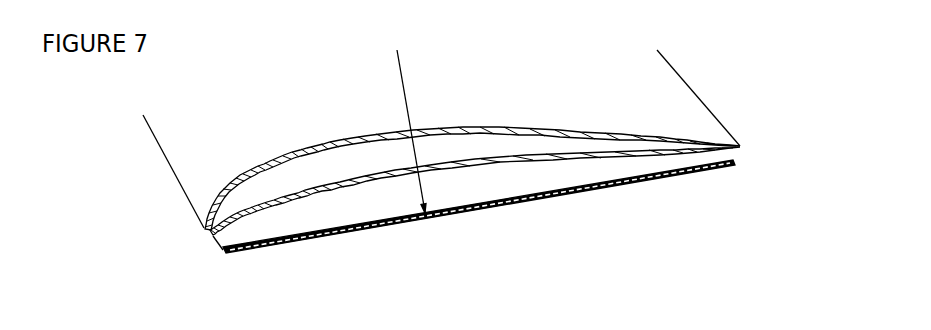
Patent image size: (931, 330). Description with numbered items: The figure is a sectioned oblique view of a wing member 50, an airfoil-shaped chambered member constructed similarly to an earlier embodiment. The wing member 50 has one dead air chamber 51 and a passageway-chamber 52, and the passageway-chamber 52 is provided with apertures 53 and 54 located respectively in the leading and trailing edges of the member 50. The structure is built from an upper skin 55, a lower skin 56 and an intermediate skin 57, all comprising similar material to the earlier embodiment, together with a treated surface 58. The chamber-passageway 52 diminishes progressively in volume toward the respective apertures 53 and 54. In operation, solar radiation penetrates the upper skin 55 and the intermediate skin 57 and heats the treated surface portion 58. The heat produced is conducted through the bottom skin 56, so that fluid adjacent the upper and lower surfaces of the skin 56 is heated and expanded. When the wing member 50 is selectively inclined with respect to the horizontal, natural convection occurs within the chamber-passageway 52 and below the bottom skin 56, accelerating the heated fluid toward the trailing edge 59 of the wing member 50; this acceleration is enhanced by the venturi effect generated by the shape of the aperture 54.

The wing member 50 is at (578, 36).
The dead air chamber 51 is at (370, 155).
The passageway-chamber 52 is at (593, 170).
The aperture 53 is at (214, 240).
The aperture 54 is at (730, 155).
The upper skin 55 is at (458, 130).
The lower skin 56 is at (548, 199).
The intermediate skin 57 is at (313, 190).
The treated surface 58 is at (470, 203).
The trailing edge 59 is at (700, 100).